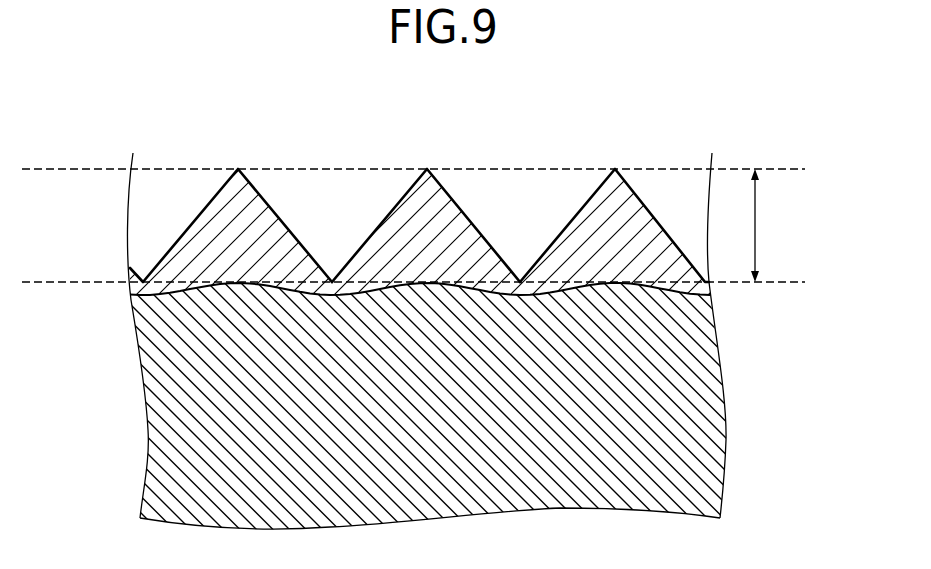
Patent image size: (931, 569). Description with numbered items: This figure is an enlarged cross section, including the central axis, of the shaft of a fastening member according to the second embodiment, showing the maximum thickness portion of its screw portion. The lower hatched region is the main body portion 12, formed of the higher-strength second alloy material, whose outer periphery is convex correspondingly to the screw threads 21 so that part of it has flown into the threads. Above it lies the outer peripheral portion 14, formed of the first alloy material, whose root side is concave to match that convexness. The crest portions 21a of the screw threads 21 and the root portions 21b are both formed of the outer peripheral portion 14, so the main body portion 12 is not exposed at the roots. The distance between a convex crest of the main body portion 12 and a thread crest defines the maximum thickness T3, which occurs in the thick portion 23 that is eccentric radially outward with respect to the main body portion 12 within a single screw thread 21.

The outer peripheral portion 14 is at (426, 190).
The screw threads 21 is at (460, 201).
The crest portions 21a is at (427, 169).
The root portions 21b is at (333, 278).
The thick portion 23 is at (613, 185).
The main body portion 12 is at (705, 417).
The maximum thickness T3 is at (771, 225).